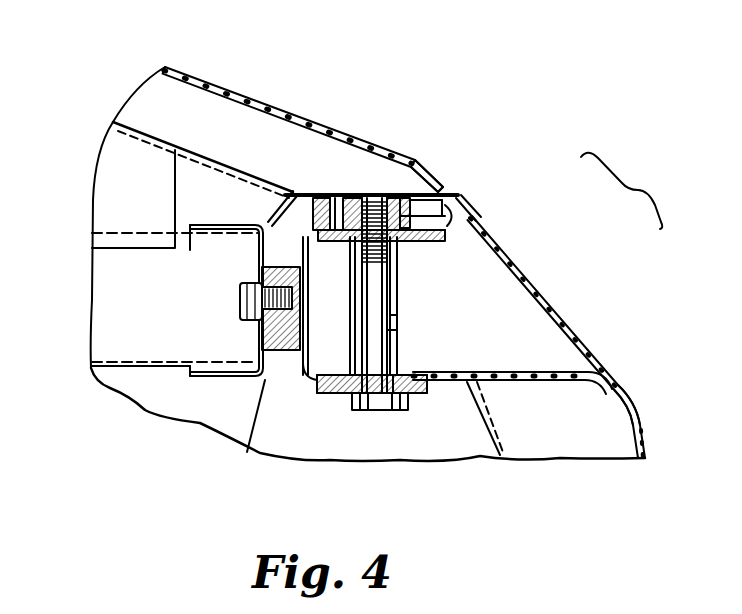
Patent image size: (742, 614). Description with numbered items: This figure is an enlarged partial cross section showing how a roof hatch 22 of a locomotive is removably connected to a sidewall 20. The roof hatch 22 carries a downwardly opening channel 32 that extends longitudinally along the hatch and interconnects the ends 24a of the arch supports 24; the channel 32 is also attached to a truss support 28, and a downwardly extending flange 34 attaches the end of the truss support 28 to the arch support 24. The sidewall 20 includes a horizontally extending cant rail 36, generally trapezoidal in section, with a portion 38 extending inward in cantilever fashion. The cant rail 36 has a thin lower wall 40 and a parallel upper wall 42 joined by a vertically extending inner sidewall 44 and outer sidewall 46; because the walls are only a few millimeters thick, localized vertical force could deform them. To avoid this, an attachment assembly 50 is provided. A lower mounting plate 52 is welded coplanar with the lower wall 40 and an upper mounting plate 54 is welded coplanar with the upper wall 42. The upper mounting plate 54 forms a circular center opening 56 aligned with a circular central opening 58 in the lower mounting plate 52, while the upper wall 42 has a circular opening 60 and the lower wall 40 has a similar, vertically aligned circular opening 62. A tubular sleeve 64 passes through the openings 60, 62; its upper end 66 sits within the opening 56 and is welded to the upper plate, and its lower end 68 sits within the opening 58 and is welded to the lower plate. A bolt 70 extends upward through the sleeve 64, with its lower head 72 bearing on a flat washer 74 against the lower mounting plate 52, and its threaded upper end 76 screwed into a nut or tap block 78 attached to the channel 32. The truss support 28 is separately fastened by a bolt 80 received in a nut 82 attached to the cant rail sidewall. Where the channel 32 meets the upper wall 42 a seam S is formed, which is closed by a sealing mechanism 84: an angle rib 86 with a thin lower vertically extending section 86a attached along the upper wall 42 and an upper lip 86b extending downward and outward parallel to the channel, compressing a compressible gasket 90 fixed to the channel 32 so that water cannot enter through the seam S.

The sidewall 20 is at (647, 436).
The roof hatch 22 is at (183, 68).
The arch support 24 is at (188, 125).
The end of arch support 24a is at (385, 178).
The truss support 28 is at (120, 283).
The downwardly opening channel 32 is at (447, 186).
The downwardly extending flange 34 is at (122, 170).
The cant rail 36 is at (560, 305).
The portion of cant rail 38 is at (247, 450).
The lower wall 40 is at (475, 450).
The upper wall 42 is at (445, 262).
The inner sidewall 44 is at (265, 385).
The outer sidewall 46 is at (607, 353).
The attachment assembly 50 is at (405, 315).
The lower mounting plate 52 is at (310, 395).
The upper mounting plate 54 is at (296, 192).
The circular center opening 56 is at (329, 306).
The circular central opening 58 is at (413, 405).
The circular opening in upper wall 60 is at (415, 306).
The circular opening in lower wall 62 is at (400, 365).
The tubular sleeve 64 is at (413, 303).
The upper end of sleeve 66 is at (415, 172).
The lower end of sleeve 68 is at (340, 402).
The bolt 70 is at (413, 337).
The lower head 72 is at (377, 412).
The flat washer 74 is at (427, 400).
The upper end of bolt 76 is at (363, 197).
The nut or tap block 78 is at (333, 197).
The bolt 80 is at (238, 313).
The nut 82 is at (270, 220).
The sealing mechanism 84 is at (628, 191).
The angle rib 86 is at (485, 222).
The lower vertically extending section 86a is at (440, 262).
The upper lip 86b is at (480, 210).
The compressible gasket 90 is at (478, 193).
The seam S is at (470, 228).